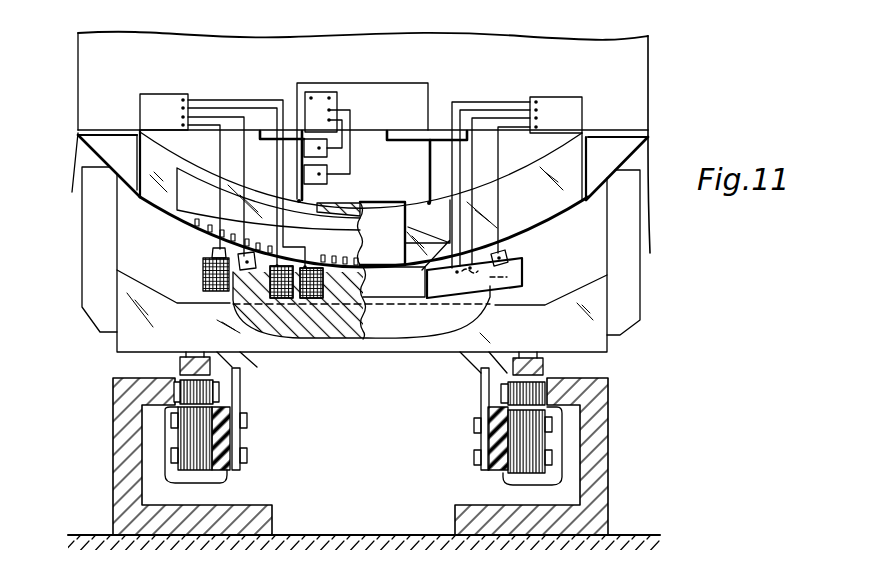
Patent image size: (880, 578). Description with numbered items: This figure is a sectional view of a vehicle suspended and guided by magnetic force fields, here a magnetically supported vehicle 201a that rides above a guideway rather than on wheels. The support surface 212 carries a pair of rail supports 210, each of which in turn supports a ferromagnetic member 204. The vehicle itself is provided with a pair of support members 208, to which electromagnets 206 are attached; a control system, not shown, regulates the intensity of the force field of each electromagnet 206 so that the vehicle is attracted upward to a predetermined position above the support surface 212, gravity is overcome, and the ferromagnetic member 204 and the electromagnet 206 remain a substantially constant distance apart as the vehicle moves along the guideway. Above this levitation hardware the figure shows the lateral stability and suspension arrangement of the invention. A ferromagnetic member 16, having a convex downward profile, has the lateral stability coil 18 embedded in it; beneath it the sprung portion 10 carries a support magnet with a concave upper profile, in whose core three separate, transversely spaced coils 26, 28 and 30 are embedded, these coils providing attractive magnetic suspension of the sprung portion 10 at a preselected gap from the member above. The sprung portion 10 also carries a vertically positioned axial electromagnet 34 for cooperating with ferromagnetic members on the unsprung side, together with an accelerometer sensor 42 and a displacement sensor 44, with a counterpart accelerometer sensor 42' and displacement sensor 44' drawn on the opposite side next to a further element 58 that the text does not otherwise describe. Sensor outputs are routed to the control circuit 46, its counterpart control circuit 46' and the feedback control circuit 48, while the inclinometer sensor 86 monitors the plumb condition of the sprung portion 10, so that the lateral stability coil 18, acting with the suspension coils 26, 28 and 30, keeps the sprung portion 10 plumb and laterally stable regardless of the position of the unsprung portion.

The magnetic supported vehicle 201a is at (650, 52).
The control circuit 46 is at (223, 163).
The terminal block 46' is at (519, 165).
The feedback control circuit 48 is at (318, 91).
The inclinometer sensor 86 is at (328, 175).
The lateral stability coil 18 is at (200, 226).
The ferromagnetic member 16 is at (336, 251).
The axial electromagnet 34 is at (387, 205).
The sprung portion 10 is at (397, 331).
The displacement sensor 44 is at (328, 307).
The electric magnetic coil 30 is at (431, 299).
The accelerometer sensor 42 is at (205, 266).
The electric magnetic coil 26 is at (282, 298).
The electric magnetic coil 28 is at (317, 299).
The coil 42' is at (533, 248).
The coil mounting block 44' is at (501, 278).
The coil terminals 58 is at (507, 288).
The rail support 210 is at (612, 400).
The ferromagnetic member 204 is at (527, 392).
The electromagnet 206 is at (560, 472).
The support member 208 is at (484, 437).
The support surface 212 is at (346, 532).